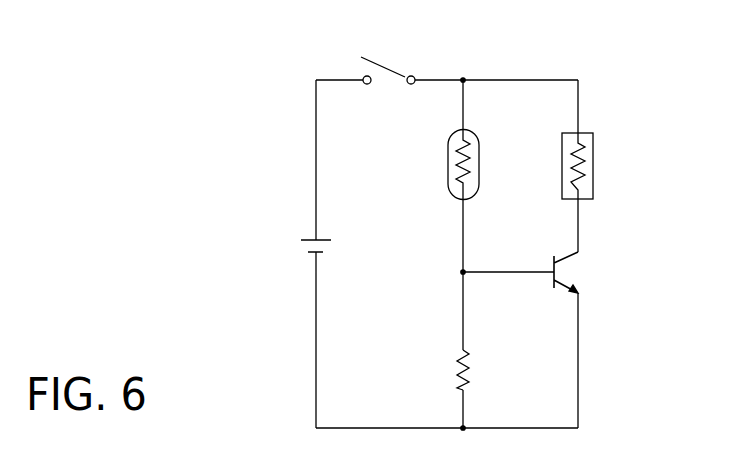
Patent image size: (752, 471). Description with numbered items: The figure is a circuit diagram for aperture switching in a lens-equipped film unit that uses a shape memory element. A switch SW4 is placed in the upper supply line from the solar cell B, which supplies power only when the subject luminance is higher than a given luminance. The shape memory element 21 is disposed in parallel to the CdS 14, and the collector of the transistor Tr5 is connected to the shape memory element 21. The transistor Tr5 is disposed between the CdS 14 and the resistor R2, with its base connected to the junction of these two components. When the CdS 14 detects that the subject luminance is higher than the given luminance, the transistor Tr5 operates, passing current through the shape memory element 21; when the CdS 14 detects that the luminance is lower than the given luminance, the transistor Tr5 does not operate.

The switch SW4 is at (390, 63).
The solar cell B is at (304, 251).
The CdS 14 is at (447, 158).
The shape memory element 21 is at (594, 170).
The transistor Tr5 is at (574, 271).
The resistor R2 is at (472, 378).